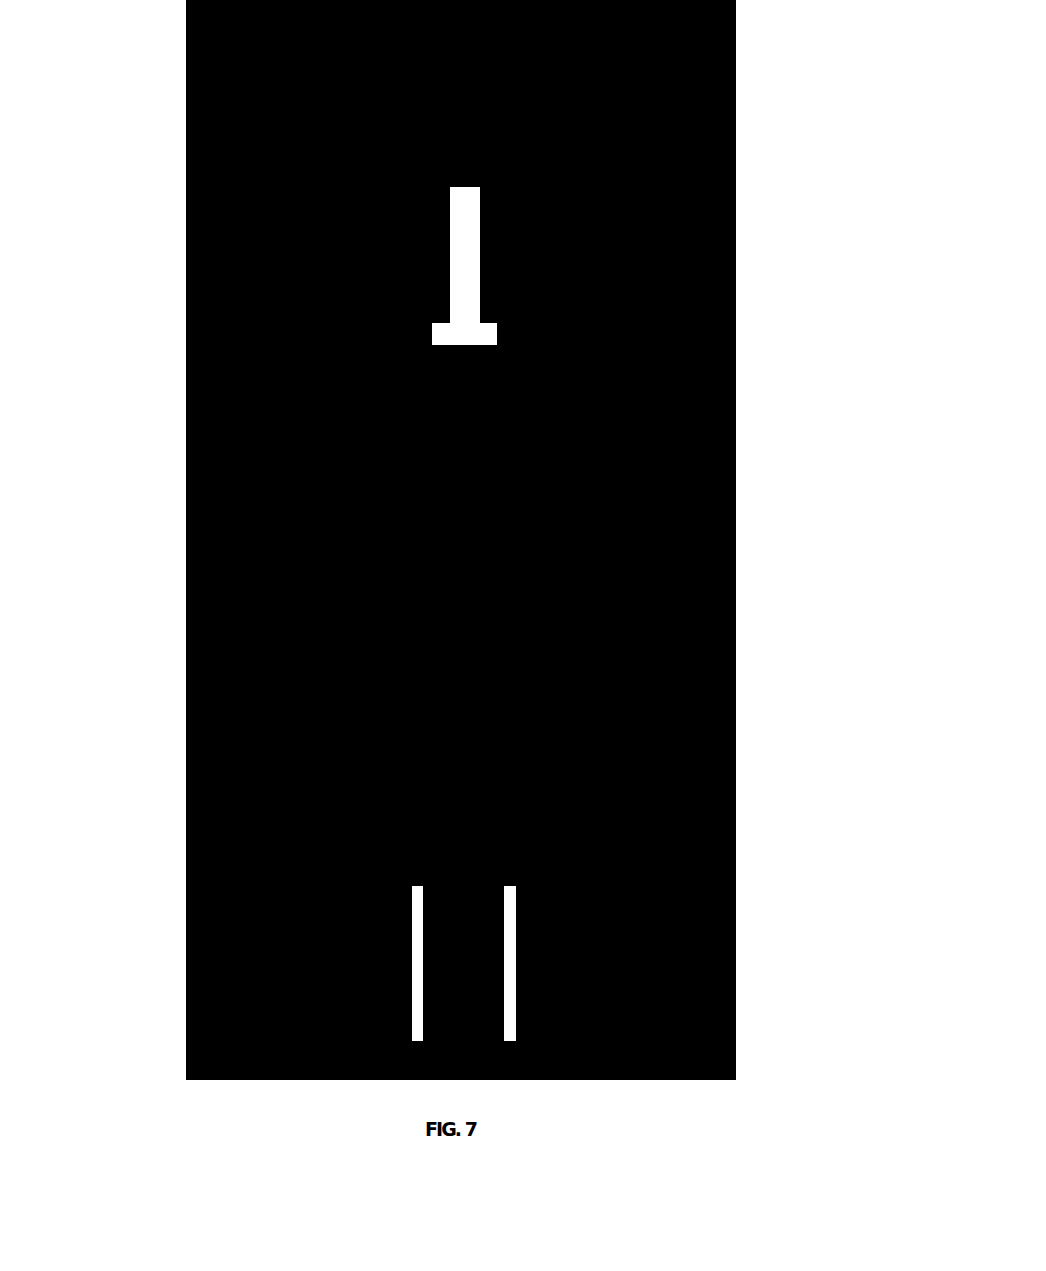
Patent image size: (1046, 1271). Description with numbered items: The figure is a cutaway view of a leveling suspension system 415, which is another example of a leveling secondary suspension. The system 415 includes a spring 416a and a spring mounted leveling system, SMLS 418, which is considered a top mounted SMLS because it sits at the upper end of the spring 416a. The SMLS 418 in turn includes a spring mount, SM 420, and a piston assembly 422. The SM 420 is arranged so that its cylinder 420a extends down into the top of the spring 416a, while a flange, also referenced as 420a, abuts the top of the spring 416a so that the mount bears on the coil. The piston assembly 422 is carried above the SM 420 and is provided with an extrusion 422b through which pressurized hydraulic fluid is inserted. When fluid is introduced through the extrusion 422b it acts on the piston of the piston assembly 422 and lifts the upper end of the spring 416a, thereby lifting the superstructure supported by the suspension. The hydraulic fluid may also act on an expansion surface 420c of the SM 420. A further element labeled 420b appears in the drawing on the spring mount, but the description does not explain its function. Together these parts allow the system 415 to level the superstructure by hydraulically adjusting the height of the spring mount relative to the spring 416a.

The leveling suspension system 415 is at (758, 627).
The spring 416a is at (625, 463).
The SMLS 418 is at (752, 181).
The SM 420 is at (736, 289).
The cylinder 420a is at (555, 412).
The piston flange 420b is at (186, 262).
The expansion surface 420c is at (400, 388).
The piston assembly 422 is at (648, 195).
The extrusion 422b is at (186, 167).